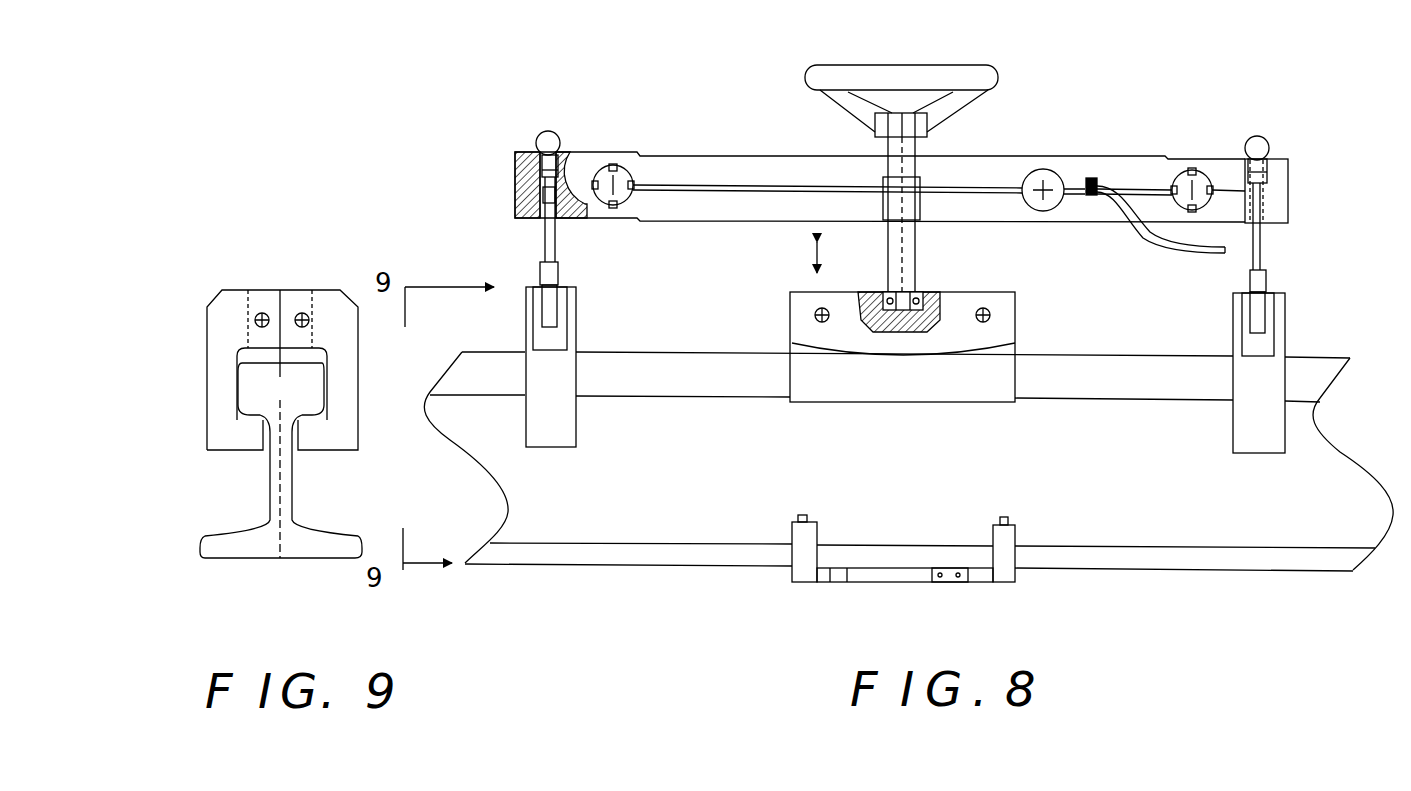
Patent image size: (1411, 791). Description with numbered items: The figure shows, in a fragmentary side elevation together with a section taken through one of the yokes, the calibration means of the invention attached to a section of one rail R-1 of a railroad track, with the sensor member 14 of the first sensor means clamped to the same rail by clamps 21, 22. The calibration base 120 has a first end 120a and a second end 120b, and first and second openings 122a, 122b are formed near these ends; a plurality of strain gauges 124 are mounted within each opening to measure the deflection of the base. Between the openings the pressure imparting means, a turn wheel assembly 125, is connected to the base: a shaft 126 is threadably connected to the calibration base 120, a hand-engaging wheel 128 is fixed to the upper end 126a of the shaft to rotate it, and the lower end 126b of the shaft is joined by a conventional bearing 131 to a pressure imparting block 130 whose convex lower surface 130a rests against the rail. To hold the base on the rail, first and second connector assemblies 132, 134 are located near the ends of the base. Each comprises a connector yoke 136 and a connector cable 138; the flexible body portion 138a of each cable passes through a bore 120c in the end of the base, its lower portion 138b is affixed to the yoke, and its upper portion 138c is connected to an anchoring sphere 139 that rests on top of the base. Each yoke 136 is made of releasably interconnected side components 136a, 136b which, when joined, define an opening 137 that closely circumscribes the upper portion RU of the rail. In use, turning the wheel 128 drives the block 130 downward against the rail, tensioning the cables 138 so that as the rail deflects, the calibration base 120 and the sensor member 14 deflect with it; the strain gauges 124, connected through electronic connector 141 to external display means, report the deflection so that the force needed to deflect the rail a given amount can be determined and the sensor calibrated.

In FIG. 8, the sensor member 14 is at (895, 585).
In FIG. 8, the rail clamp block 21 is at (818, 528).
In FIG. 8, the rail clamp block 22 is at (1020, 530).
In FIG. 8, the calibration base 120 is at (724, 155).
In FIG. 8, the first end 120a is at (520, 152).
In FIG. 8, the second end 120b is at (1280, 159).
In FIG. 8, the bore 120c is at (548, 192).
In FIG. 8, the first opening 122a is at (608, 206).
In FIG. 8, the second opening 122b is at (1190, 176).
In FIG. 8, the strain gauges 124 is at (1240, 118).
In FIG. 8, the turn wheel assembly 125 is at (922, 153).
In FIG. 8, the shaft 126 is at (916, 238).
In FIG. 8, the upper end of shaft 126a is at (910, 120).
In FIG. 8, the lower end of shaft 126b is at (925, 278).
In FIG. 8, the hand-engaging wheel 128 is at (828, 75).
In FIG. 8, the pressure imparting block 130 is at (1017, 318).
In FIG. 8, the convex lower surface 130a is at (900, 357).
In FIG. 8, the bearing 131 is at (882, 290).
In FIG. 8, the first connector assembly 132 is at (533, 246).
In FIG. 8, the second connector assembly 134 is at (1272, 250).
In FIG. 8, the connector yoke 136 is at (577, 340).
In FIG. 9, the side component 136a is at (302, 313).
In FIG. 9, the side component 136b is at (340, 345).
In FIG. 9, the opening 137 is at (237, 352).
In FIG. 8, the connector cable 138 is at (556, 232).
In FIG. 8, the flexible body portion 138a is at (545, 247).
In FIG. 8, the lower portion 138b is at (557, 317).
In FIG. 8, the upper portion 138c is at (517, 177).
In FIG. 8, the anchoring sphere 139 is at (547, 134).
In FIG. 8, the electronic connector 141 is at (1155, 245).
In FIG. 8, the rail R-1 is at (578, 552).
In FIG. 9, the upper portion of the rail RU is at (300, 385).